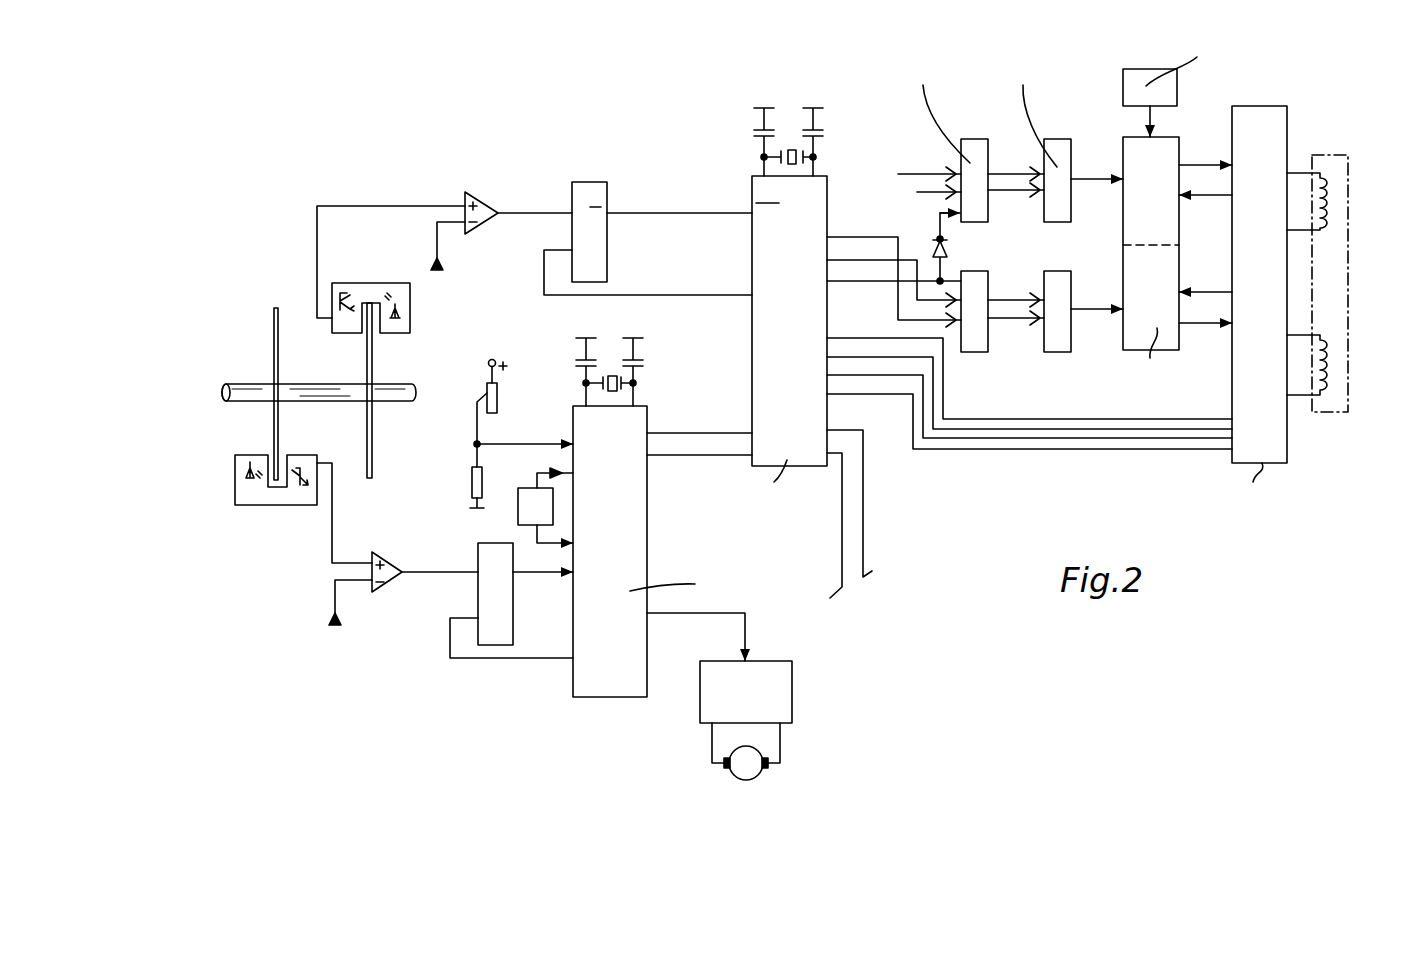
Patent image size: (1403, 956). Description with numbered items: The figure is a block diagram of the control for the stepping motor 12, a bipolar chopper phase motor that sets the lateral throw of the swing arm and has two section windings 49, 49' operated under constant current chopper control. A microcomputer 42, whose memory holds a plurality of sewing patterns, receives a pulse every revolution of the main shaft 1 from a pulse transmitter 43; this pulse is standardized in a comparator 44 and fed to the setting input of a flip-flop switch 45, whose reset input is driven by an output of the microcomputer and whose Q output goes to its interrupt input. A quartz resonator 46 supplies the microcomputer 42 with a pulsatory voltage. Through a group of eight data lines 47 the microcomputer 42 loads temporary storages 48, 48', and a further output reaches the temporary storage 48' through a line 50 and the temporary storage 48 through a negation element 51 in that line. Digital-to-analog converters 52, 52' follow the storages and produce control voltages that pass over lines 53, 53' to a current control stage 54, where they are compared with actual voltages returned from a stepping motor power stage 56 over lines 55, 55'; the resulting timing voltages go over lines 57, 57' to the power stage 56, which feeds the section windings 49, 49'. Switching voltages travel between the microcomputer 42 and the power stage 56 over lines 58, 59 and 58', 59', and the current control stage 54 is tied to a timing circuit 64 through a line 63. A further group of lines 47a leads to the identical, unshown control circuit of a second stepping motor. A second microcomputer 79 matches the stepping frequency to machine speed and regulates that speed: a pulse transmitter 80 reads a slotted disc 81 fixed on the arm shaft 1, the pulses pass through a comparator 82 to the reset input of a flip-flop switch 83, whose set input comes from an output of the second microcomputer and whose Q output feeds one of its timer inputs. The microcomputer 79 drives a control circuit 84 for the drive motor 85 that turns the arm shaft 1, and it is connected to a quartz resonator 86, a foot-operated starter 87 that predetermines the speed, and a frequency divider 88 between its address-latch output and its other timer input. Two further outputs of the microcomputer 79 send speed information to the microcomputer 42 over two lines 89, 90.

The main shaft 1 is at (323, 387).
The stepping motor 12 is at (1341, 278).
The microcomputer 42 is at (757, 346).
The pulse transmitter 43 is at (381, 340).
The comparator 44 is at (485, 202).
The flip-flop switch 45 is at (591, 183).
The quartz resonator 46 is at (798, 147).
The data lines 47 is at (863, 237).
The group of lines 47a is at (857, 535).
The temporary storage 48 is at (935, 134).
The temporary storage 48' is at (982, 296).
The section winding 49 is at (1329, 201).
The section winding 49' is at (1330, 365).
The line 50 is at (872, 283).
The negation element 51 is at (948, 251).
The digital-to-analog converter 52 is at (1029, 134).
The digital-to-analog converter 52' is at (1033, 296).
The line 53 is at (1097, 176).
The line 53' is at (1097, 306).
The current control stage 54 is at (1168, 143).
The line 55 is at (1205, 221).
The line 55' is at (1205, 273).
The stepping motor power stage 56 is at (1265, 112).
The line 57 is at (1205, 147).
The line 57' is at (1205, 344).
The line 58 is at (1029, 393).
The line 58' is at (1029, 428).
The line 59 is at (1029, 378).
The line 59' is at (1029, 437).
The line 63 is at (1143, 120).
The timing circuit 64 is at (1175, 84).
The second microcomputer 79 is at (645, 553).
The pulse transmitter 80 is at (278, 497).
The slotted disc 81 is at (274, 357).
The comparator 82 is at (400, 577).
The flip-flop switch 83 is at (488, 548).
The control circuit 84 is at (785, 688).
The drive motor 85 is at (757, 773).
The quartz resonator 86 is at (620, 379).
The foot-operated starter 87 is at (497, 401).
The frequency divider 88 is at (521, 490).
The line 89 is at (704, 433).
The line 90 is at (702, 456).